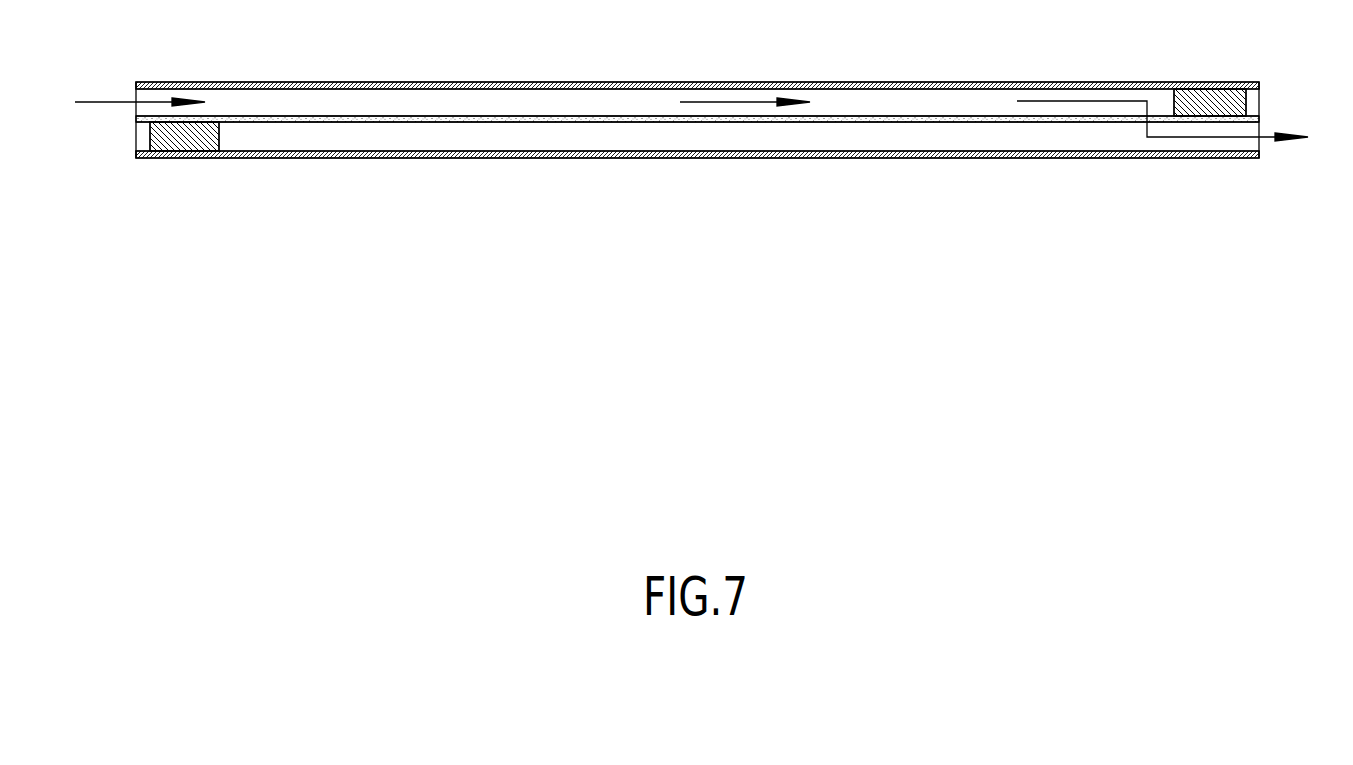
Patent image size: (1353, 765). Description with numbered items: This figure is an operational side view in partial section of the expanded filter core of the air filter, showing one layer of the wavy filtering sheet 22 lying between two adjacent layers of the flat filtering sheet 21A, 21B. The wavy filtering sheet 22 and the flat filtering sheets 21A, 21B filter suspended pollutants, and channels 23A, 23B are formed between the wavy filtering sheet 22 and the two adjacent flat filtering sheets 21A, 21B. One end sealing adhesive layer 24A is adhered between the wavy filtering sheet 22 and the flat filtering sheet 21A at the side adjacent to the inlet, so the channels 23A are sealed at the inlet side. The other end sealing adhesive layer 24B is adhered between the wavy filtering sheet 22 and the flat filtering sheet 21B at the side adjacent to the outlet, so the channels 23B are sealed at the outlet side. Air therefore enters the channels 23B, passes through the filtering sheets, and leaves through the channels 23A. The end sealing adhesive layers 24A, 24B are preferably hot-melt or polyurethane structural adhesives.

The flat filtering sheet 21A is at (895, 158).
The flat filtering sheet 21B is at (912, 82).
The wavy filtering sheet 22 is at (682, 122).
The channels 23A is at (1263, 150).
The channels 23B is at (128, 94).
The end sealing adhesive layer 24A is at (180, 140).
The end sealing adhesive layer 24B is at (1222, 93).